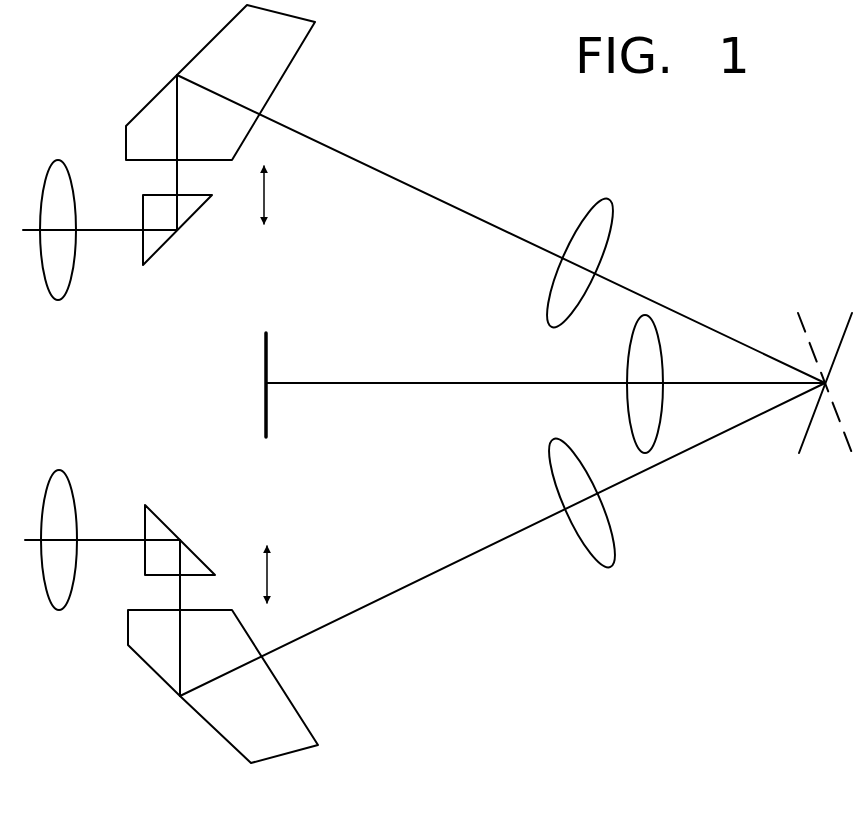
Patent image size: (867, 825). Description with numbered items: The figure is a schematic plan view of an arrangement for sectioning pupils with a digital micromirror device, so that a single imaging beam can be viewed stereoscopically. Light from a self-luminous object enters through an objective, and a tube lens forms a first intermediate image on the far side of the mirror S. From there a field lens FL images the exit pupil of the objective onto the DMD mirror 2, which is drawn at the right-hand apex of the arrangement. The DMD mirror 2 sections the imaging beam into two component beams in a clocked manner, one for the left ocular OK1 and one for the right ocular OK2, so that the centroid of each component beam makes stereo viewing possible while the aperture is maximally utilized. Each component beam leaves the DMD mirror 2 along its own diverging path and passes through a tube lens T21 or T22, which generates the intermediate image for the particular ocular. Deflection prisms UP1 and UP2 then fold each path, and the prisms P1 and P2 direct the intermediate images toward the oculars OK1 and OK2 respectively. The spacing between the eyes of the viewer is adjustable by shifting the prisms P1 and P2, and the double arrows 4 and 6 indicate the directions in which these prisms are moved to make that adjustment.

The left ocular OK1 is at (59, 248).
The right ocular OK2 is at (60, 557).
The prism P1 is at (165, 243).
The prism P2 is at (165, 522).
The deflection prism UP1 is at (292, 60).
The deflection prism UP2 is at (282, 760).
The double arrow 4 is at (264, 190).
The double arrow 6 is at (267, 576).
The mirror S is at (266, 408).
The field lens FL is at (628, 350).
The tube lens T21 is at (613, 237).
The tube lens T22 is at (615, 537).
The DMD mirror 2 is at (807, 435).